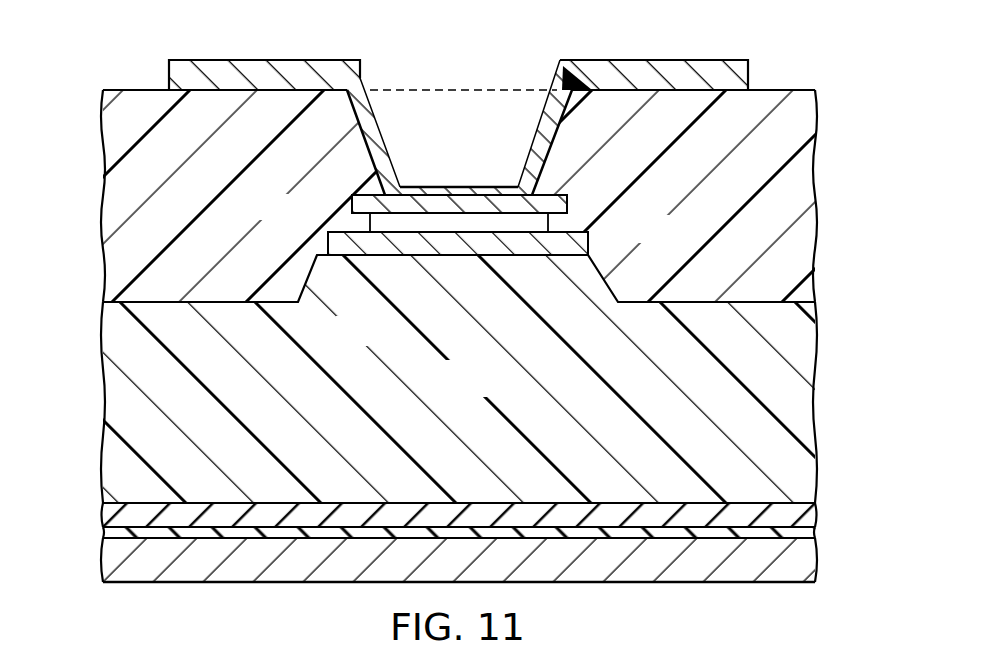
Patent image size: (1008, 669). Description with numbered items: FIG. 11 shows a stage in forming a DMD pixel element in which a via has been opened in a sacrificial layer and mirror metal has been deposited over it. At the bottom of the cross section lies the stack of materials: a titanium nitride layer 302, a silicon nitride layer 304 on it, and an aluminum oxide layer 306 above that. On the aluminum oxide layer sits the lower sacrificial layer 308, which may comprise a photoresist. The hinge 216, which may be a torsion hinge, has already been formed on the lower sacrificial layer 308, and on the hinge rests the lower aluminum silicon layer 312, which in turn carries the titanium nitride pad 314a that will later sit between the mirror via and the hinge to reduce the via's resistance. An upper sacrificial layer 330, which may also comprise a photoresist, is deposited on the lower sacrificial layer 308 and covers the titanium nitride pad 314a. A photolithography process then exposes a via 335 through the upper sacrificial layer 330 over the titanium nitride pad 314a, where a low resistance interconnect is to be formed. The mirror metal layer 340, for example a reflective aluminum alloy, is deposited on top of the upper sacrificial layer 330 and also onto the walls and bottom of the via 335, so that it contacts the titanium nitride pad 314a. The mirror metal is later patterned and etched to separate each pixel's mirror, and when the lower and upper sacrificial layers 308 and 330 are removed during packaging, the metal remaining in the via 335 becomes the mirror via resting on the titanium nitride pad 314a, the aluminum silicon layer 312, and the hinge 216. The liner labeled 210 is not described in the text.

The titanium nitride layer 302 is at (820, 557).
The silicon nitride layer 304 is at (105, 532).
The aluminum oxide layer 306 is at (817, 517).
The sacrificial layer 308 is at (487, 393).
The hinge 216 is at (390, 246).
The aluminum silicon layer 312 is at (375, 222).
The titanium nitride pad 314a is at (557, 200).
The upper sacrificial layer 330 is at (103, 193).
The via 335 is at (452, 110).
The mirror metal layer 340 is at (292, 70).
The barrier liner layer 210 is at (373, 112).